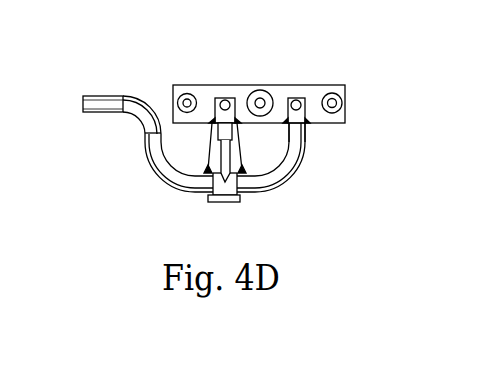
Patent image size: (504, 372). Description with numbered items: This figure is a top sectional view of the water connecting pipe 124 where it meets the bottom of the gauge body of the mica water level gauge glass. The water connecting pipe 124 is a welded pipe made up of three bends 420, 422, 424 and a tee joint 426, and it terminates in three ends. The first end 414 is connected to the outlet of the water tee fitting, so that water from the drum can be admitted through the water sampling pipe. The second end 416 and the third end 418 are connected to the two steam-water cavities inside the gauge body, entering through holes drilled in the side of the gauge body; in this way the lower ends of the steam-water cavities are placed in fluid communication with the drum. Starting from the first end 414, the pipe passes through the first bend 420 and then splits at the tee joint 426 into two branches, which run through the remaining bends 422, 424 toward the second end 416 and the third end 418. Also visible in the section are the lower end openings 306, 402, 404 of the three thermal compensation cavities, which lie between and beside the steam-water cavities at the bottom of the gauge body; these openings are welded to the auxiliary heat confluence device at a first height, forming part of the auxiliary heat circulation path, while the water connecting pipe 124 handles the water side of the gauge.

The water connecting pipe 124 is at (168, 173).
The lower end opening 306 is at (270, 98).
The lower end opening 402 is at (185, 101).
The lower end opening 404 is at (337, 103).
The first end 414 is at (100, 103).
The second end 416 is at (228, 97).
The third end 418 is at (293, 98).
The bend 420 is at (142, 100).
The bend 422 is at (192, 190).
The bend 424 is at (288, 170).
The tee joint 426 is at (243, 198).